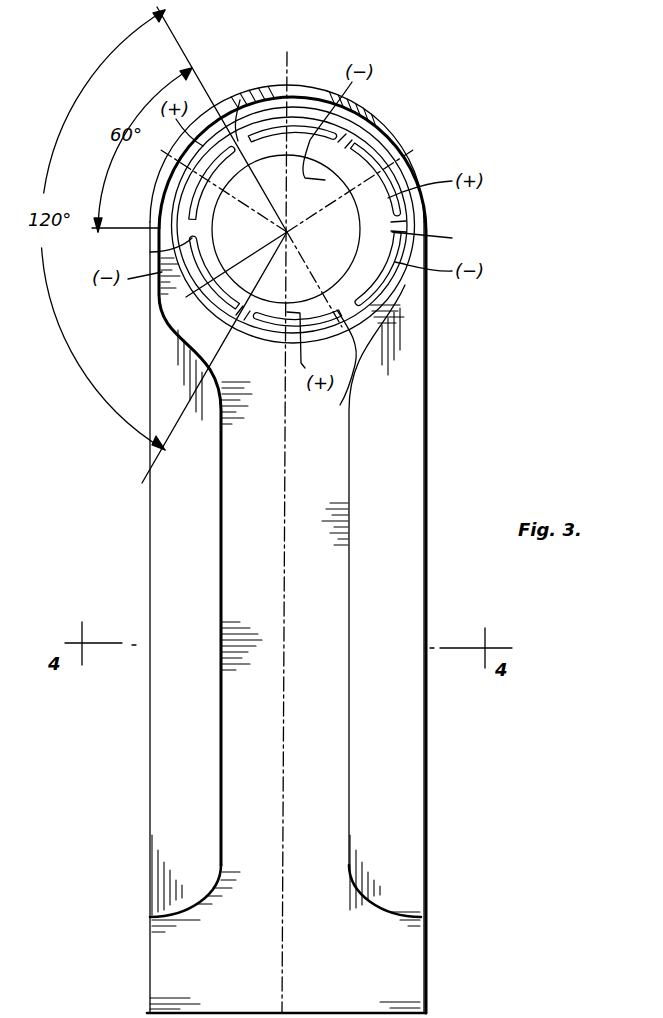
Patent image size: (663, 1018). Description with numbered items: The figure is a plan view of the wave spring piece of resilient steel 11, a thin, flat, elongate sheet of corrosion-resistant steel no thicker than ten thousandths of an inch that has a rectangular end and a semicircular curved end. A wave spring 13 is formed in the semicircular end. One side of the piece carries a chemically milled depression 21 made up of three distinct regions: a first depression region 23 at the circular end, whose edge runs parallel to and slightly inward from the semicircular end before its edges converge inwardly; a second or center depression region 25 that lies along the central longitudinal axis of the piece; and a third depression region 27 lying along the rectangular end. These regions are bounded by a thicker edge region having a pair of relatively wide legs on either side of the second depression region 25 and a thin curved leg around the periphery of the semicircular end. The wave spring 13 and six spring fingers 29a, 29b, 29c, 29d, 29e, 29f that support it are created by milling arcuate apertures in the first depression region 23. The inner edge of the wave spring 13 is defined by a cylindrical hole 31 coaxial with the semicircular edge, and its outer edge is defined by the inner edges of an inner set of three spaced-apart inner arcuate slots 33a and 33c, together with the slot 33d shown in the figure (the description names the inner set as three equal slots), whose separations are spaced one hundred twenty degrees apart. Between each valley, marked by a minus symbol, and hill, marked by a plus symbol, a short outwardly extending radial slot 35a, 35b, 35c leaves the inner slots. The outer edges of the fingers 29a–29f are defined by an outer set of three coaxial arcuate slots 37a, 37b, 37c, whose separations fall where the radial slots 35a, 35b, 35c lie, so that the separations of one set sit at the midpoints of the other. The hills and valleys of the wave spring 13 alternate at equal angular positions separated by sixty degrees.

The wave spring piece of resilient steel 11 is at (428, 801).
The wave spring 13 is at (357, 171).
The depression 21 is at (375, 365).
The first depression region 23 is at (412, 295).
The second depression region 25 is at (337, 586).
The third depression region 27 is at (405, 978).
The spring finger 29a is at (300, 127).
The spring finger 29b is at (380, 190).
The spring finger 29c is at (378, 322).
The spring finger 29d is at (270, 345).
The spring finger 29e is at (210, 300).
The spring finger 29f is at (190, 203).
The cylindrical hole 31 is at (218, 235).
The inner arcuate slot 33a is at (381, 226).
The inner arcuate slot 33c is at (338, 150).
The bridge 33d is at (243, 319).
The radial slot 35a is at (440, 239).
The radial slot 35b is at (277, 336).
The radial slot 35c is at (240, 100).
The outer arcuate slot 37a is at (340, 405).
The outer arcuate slot 37b is at (150, 252).
The outer arcuate slot 37c is at (345, 152).